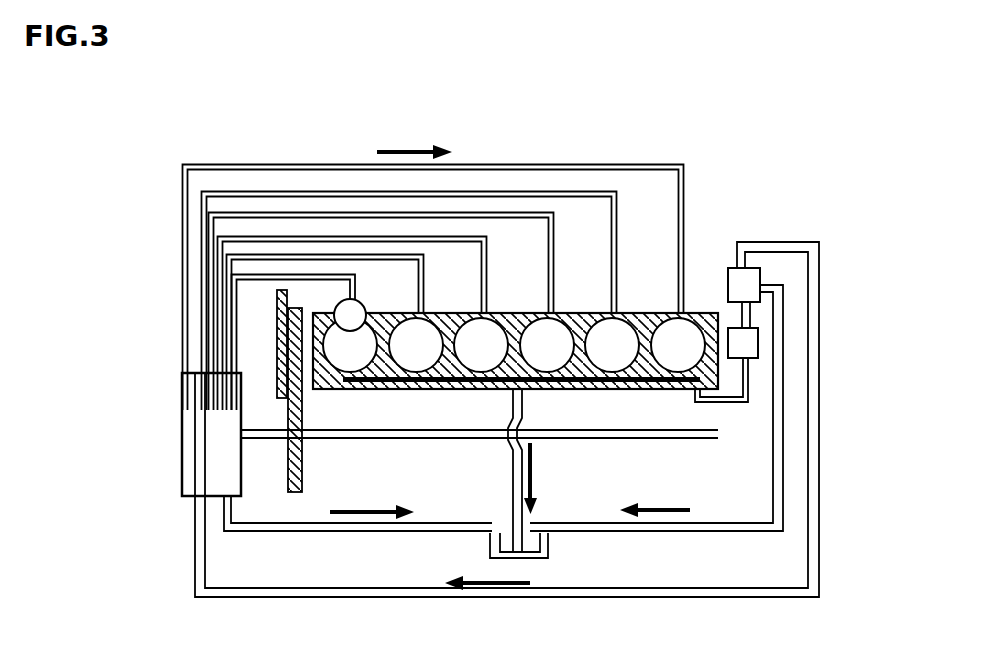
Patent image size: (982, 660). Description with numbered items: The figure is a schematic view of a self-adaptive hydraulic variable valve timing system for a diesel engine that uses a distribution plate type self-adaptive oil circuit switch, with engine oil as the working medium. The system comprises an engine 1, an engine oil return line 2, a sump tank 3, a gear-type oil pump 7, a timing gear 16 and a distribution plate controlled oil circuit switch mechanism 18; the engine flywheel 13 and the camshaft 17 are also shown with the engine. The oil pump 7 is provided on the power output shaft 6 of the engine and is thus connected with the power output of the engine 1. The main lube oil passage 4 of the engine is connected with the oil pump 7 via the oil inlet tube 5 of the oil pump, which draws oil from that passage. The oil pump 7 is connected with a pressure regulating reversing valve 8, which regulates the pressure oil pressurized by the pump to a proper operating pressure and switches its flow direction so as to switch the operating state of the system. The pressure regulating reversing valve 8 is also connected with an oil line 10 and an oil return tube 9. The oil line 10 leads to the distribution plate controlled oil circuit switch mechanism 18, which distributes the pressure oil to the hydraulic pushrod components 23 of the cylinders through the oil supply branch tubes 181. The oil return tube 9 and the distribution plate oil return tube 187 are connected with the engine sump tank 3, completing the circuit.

The engine block 1 is at (295, 380).
The engine oil return line 2 is at (509, 492).
The engine sump tank 3 is at (482, 541).
The engine main lube oil passage 4 is at (657, 387).
The oil pump oil inlet tube 5 is at (748, 382).
The engine power output shaft 6 is at (753, 361).
The oil pump 7 is at (741, 345).
The pressure regulating reversing valve 8 is at (741, 288).
The oil return tube 9 is at (762, 289).
The oil line 10 is at (826, 252).
The engine flywheel 13 is at (277, 343).
The timing gear 16 is at (290, 421).
The camshaft 17 is at (288, 441).
The distribution plate controlled oil circuit switch mechanism 18 is at (212, 487).
The hydraulic pushrod components 23 is at (338, 309).
The oil supply branch tubes 181 is at (400, 236).
The distribution plate oil return tube 187 is at (240, 532).